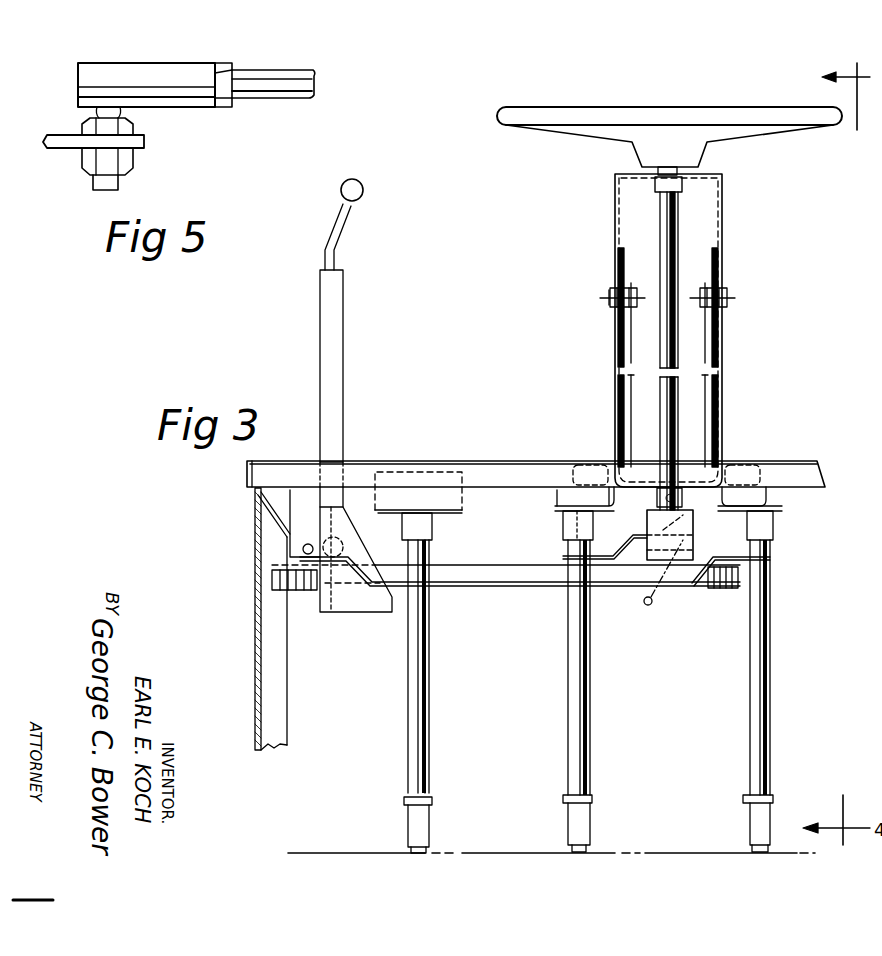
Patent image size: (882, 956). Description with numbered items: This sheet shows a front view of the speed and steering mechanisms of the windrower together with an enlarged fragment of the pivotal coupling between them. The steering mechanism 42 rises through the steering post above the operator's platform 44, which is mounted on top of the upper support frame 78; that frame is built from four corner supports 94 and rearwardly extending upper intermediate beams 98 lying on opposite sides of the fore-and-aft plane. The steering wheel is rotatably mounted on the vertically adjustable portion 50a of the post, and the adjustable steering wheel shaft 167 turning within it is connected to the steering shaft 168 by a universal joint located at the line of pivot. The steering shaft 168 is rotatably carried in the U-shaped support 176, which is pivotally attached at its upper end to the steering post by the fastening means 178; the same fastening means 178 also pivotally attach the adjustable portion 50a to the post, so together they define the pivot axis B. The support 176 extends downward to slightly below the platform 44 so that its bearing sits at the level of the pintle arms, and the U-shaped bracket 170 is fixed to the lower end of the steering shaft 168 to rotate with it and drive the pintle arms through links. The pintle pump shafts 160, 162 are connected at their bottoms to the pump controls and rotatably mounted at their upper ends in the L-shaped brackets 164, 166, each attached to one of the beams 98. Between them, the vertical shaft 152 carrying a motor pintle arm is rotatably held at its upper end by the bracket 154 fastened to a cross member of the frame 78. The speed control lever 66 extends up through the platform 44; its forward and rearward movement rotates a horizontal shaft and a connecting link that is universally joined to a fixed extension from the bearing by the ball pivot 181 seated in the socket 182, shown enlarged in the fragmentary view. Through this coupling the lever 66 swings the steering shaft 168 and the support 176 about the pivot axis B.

In FIG. 3, the steering mechanism 42 is at (707, 606).
In FIG. 3, the operator's platform 44 is at (520, 430).
In FIG. 3, the vertically adjustable portion of the steering post 50a is at (722, 196).
In FIG. 3, the speed control lever 66 is at (338, 249).
In FIG. 3, the upper support frame 78 is at (243, 482).
In FIG. 3, the corner support 94 is at (255, 652).
In FIG. 3, the rearwardly extending beam 98 is at (600, 460).
In FIG. 3, the vertical shaft 152 is at (425, 718).
In FIG. 3, the bracket 154 is at (455, 498).
In FIG. 3, the pintle pump shaft 160 is at (750, 752).
In FIG. 3, the pintle pump shaft 162 is at (590, 727).
In FIG. 3, the L-shaped bracket 164 is at (770, 504).
In FIG. 3, the L-shaped bracket 166 is at (568, 506).
In FIG. 3, the adjustable steering wheel shaft 167 is at (680, 244).
In FIG. 3, the steering shaft 168 is at (680, 403).
In FIG. 3, the U-shaped bracket 170 is at (693, 546).
In FIG. 3, the U-shaped support 176 is at (697, 347).
In FIG. 3, the fastening means 178 is at (600, 298).
In FIG. 5, the ball pivot 181 is at (197, 48).
In FIG. 5, the socket 182 is at (124, 184).
In FIG. 3, the pivot axis B is at (609, 292).